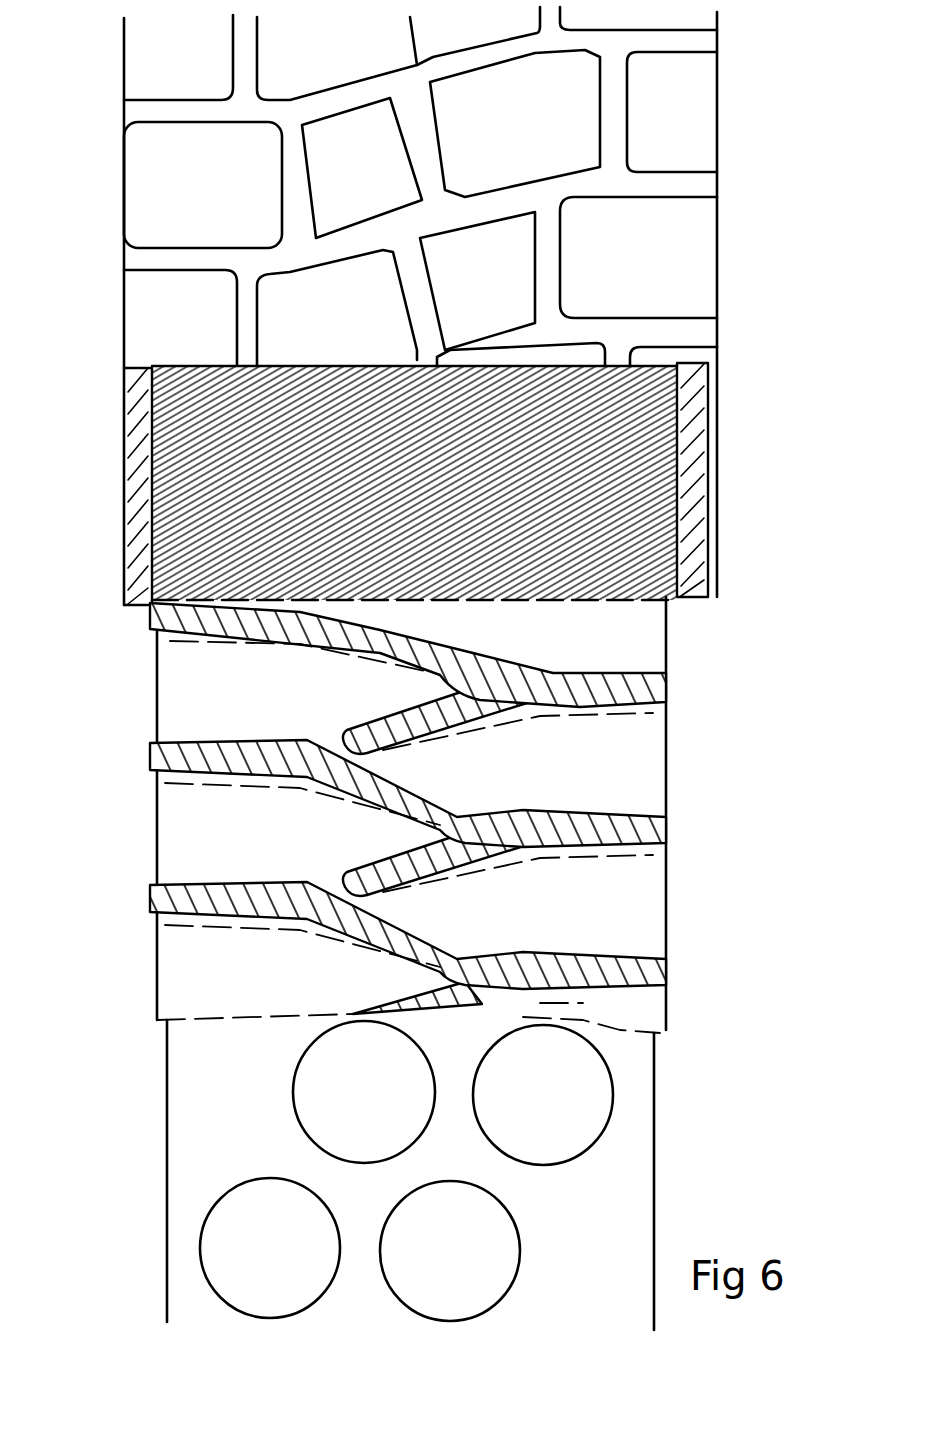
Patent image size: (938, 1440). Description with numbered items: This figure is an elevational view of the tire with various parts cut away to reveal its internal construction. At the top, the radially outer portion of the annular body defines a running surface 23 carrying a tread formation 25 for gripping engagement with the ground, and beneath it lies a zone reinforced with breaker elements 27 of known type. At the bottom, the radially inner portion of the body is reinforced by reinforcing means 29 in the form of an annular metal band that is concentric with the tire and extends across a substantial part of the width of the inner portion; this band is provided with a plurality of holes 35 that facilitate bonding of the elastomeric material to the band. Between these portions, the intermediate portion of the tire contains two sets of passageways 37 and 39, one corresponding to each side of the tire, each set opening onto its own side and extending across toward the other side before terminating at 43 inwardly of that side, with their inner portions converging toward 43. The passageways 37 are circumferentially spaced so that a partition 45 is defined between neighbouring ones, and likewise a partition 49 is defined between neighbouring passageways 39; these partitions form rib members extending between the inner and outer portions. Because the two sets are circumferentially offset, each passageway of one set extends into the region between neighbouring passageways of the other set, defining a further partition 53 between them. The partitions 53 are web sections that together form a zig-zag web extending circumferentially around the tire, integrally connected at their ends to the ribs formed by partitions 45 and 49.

The running surface 23 is at (683, 271).
The tread formation 25 is at (697, 183).
The breaker elements 27 is at (712, 476).
The reinforcing means 29 is at (627, 1187).
The holes 35 is at (225, 1236).
The passageways 37 is at (185, 985).
The passageways 39 is at (732, 910).
The passageway termination 43 is at (413, 977).
The partition 45 is at (240, 907).
The partition 49 is at (737, 968).
The further partition 53 is at (407, 920).